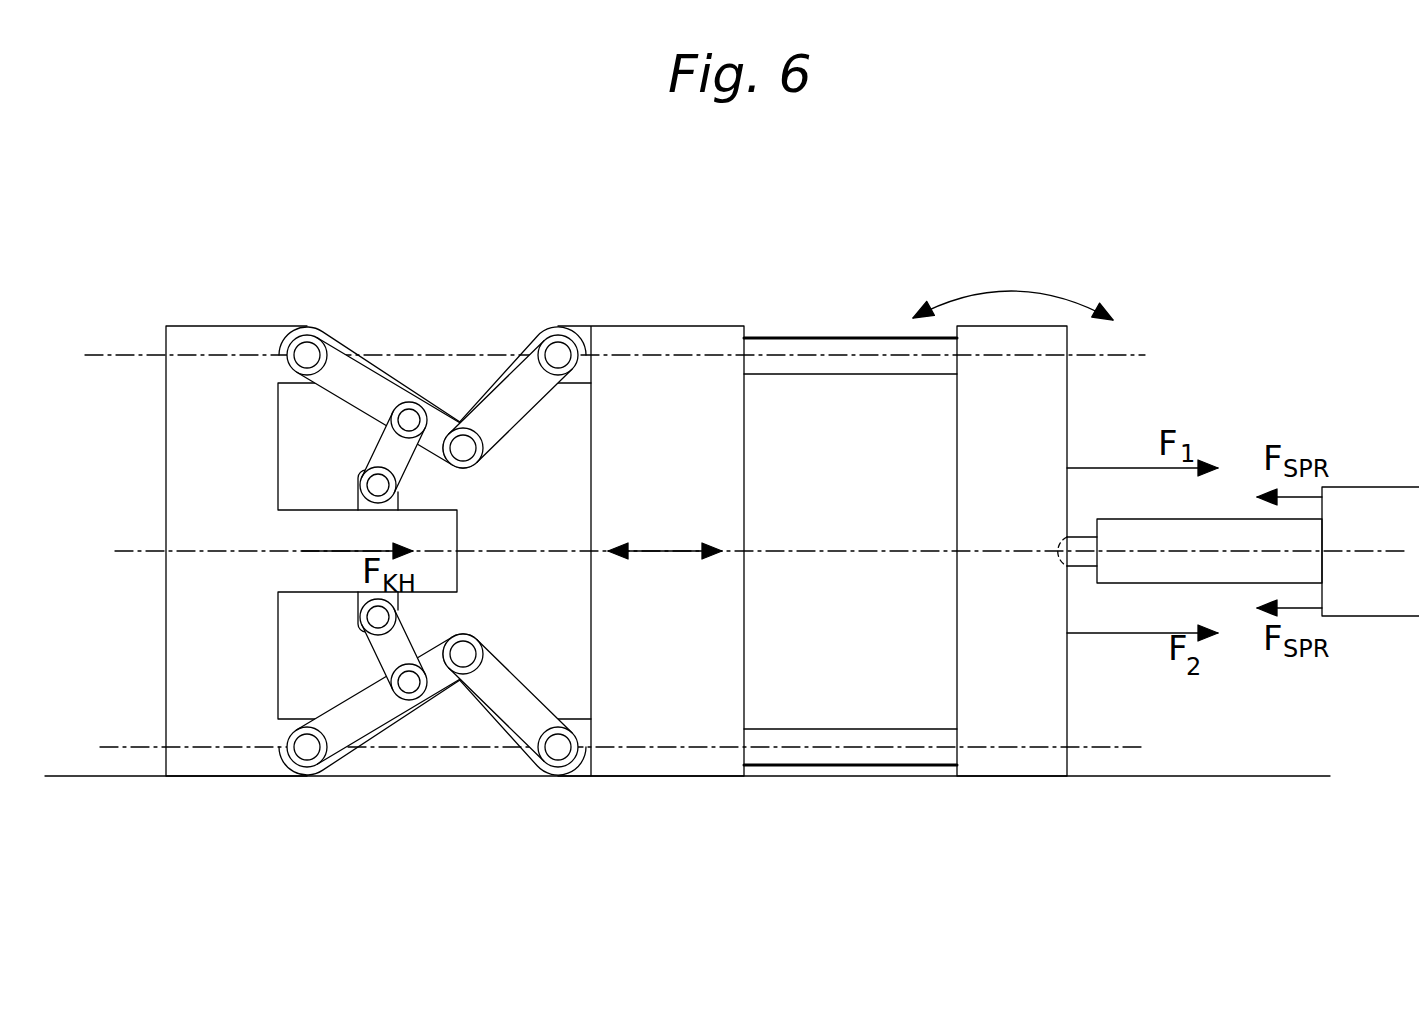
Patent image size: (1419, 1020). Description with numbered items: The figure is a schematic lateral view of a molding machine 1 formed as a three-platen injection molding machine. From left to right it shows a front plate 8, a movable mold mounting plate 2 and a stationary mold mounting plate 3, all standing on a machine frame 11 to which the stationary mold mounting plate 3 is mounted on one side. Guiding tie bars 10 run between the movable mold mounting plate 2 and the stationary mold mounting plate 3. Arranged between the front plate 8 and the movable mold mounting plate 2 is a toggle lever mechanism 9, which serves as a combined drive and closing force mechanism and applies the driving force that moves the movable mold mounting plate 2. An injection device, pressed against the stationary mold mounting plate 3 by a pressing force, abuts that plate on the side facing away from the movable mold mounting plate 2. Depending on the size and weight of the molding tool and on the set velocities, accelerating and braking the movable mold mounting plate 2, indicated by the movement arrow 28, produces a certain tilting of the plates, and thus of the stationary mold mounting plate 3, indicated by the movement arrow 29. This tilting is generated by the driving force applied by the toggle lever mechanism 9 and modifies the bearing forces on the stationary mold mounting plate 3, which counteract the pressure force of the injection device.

The molding machine 1 is at (1144, 213).
The movable mold mounting plate 2 is at (657, 729).
The stationary mold mounting plate 3 is at (1022, 730).
The front plate 8 is at (230, 730).
The toggle lever mechanism 9 is at (447, 327).
The guiding tie bars 10 is at (863, 357).
The machine frame 11 is at (670, 843).
The movement arrow 28 is at (665, 533).
The movement arrow 29 is at (1013, 285).